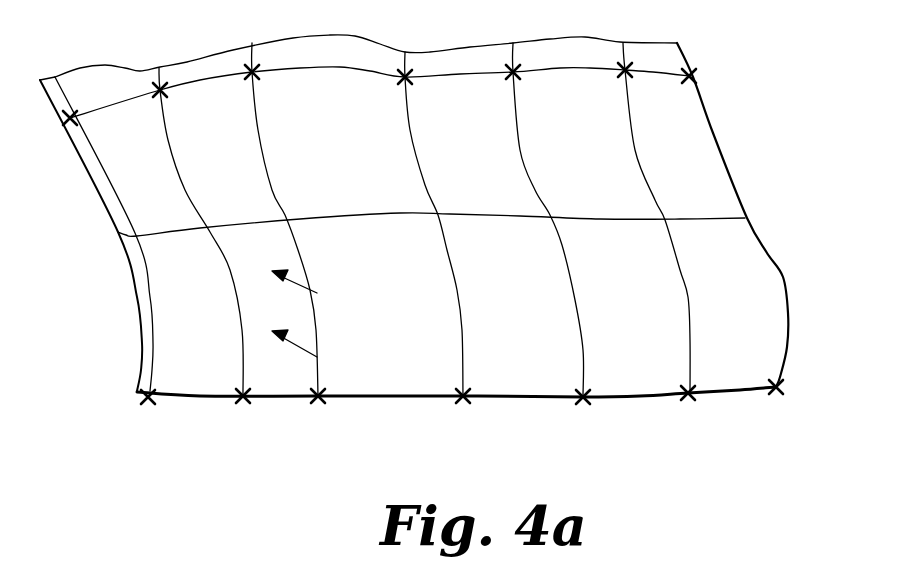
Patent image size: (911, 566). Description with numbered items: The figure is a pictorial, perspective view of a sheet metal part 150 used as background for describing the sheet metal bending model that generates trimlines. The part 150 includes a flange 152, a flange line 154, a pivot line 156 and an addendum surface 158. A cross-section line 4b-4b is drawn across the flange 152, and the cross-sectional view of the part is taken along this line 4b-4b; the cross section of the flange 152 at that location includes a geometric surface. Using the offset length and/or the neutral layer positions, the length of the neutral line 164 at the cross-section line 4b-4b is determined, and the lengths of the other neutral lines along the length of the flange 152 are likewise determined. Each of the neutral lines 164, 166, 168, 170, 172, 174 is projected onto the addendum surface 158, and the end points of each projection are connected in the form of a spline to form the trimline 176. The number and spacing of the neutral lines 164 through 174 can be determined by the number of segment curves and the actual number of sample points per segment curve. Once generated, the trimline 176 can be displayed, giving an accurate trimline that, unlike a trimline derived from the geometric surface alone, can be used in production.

The part 150 is at (63, 242).
The flange 152 is at (763, 280).
The flange line 154 is at (750, 392).
The pivot line 156 is at (722, 218).
The addendum surface 158 is at (698, 153).
The neutral line 164 is at (318, 372).
The neutral line 166 is at (243, 372).
The neutral line 168 is at (463, 366).
The neutral line 170 is at (583, 365).
The neutral line 172 is at (690, 360).
The neutral line 174 is at (153, 373).
The trimline 176 is at (654, 70).
The cross-section line 4b is at (303, 342).